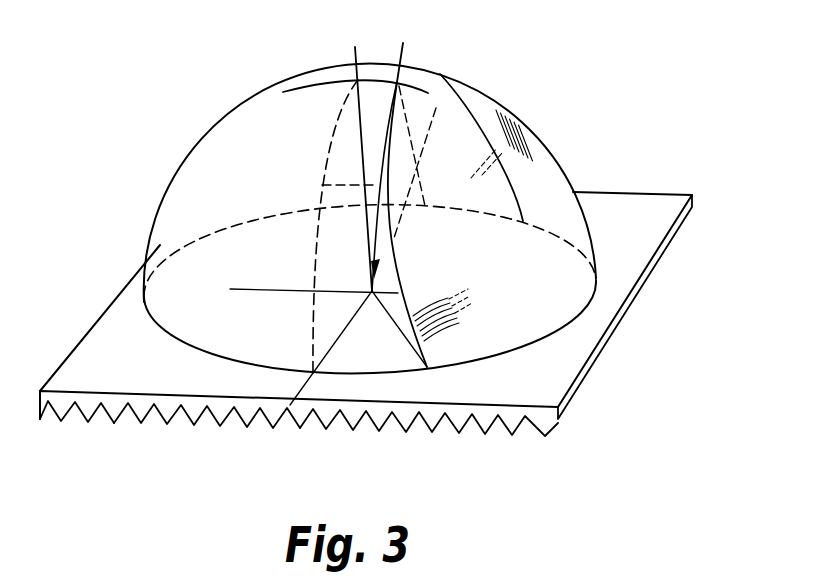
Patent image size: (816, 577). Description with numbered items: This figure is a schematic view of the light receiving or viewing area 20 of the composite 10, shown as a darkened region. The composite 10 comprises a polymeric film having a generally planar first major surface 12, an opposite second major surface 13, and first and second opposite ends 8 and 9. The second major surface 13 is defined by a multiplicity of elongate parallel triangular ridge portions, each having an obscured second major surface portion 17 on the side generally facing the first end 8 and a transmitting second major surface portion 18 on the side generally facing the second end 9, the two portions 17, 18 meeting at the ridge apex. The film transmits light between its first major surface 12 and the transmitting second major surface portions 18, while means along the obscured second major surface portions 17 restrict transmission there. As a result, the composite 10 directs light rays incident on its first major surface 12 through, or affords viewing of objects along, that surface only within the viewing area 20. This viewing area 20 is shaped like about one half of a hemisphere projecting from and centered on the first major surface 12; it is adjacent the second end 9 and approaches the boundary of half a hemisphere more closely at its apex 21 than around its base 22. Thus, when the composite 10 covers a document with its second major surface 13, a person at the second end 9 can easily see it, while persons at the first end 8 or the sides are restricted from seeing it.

The first end 8 is at (79, 343).
The second end 9 is at (647, 278).
The composite 10 is at (651, 184).
The first major surface 12 is at (120, 305).
The second major surface 13 is at (232, 416).
The obscured second major surface portion 17 is at (395, 420).
The transmitting second major surface portion 18 is at (100, 410).
The light receiving or viewing area 20 is at (482, 98).
The apex 21 is at (397, 82).
The base 22 is at (499, 354).